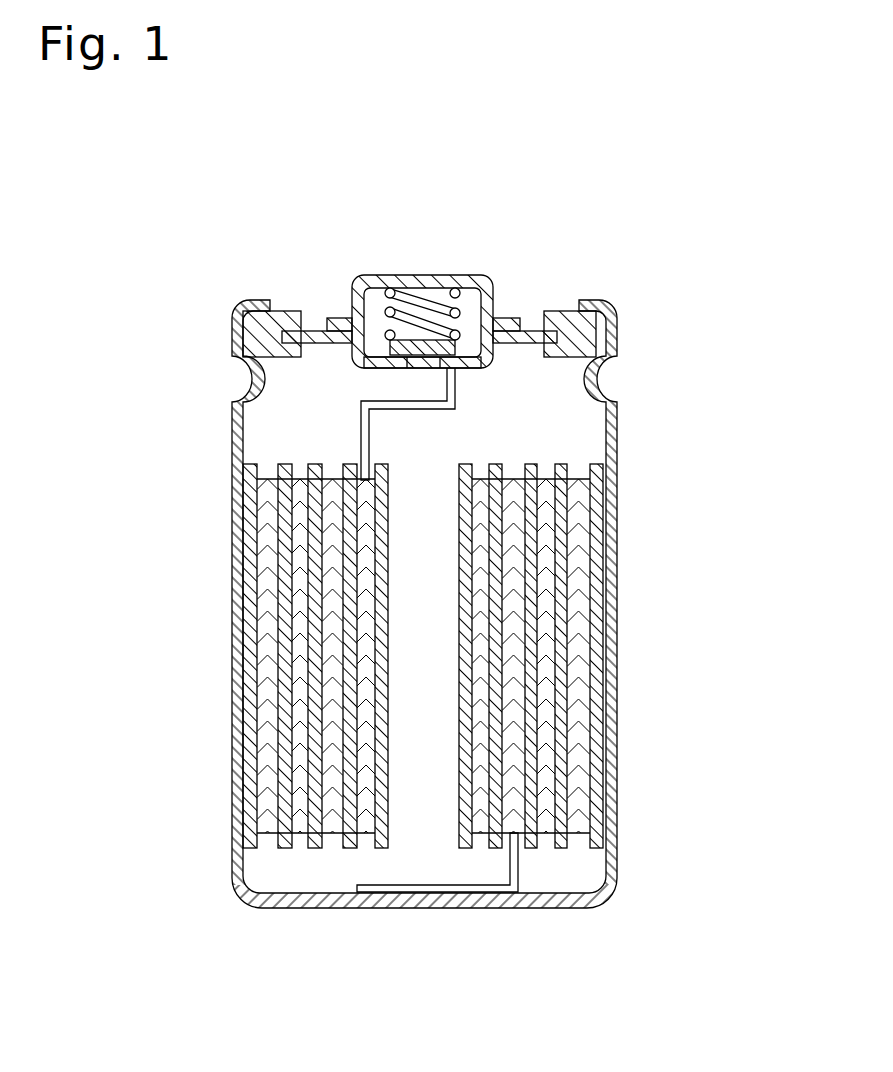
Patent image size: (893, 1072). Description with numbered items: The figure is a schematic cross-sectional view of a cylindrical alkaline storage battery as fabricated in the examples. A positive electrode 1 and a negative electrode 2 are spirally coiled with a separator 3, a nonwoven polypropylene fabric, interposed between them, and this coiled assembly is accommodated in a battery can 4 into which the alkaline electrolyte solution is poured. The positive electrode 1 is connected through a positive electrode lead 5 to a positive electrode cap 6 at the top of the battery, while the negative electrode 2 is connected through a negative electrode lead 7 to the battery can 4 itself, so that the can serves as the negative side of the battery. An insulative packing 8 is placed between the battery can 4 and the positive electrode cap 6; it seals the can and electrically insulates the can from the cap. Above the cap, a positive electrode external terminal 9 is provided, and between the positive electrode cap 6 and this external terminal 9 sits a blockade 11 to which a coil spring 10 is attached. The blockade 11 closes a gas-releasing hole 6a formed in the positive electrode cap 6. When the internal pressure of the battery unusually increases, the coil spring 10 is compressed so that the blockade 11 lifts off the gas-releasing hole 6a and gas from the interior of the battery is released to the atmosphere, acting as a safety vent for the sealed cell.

The positive electrode 1 is at (567, 737).
The negative electrode 2 is at (605, 590).
The separator 3 is at (587, 647).
The battery can 4 is at (617, 522).
The positive electrode lead 5 is at (363, 447).
The positive electrode cap 6 is at (513, 343).
The gas-releasing hole 6a is at (408, 367).
The negative electrode lead 7 is at (513, 867).
The insulative packing 8 is at (287, 313).
The positive electrode external terminal 9 is at (450, 275).
The coil spring 10 is at (422, 300).
The blockade 11 is at (393, 340).